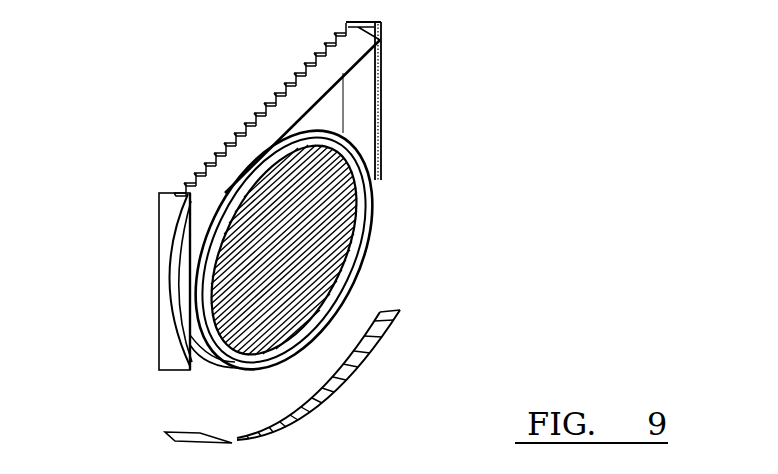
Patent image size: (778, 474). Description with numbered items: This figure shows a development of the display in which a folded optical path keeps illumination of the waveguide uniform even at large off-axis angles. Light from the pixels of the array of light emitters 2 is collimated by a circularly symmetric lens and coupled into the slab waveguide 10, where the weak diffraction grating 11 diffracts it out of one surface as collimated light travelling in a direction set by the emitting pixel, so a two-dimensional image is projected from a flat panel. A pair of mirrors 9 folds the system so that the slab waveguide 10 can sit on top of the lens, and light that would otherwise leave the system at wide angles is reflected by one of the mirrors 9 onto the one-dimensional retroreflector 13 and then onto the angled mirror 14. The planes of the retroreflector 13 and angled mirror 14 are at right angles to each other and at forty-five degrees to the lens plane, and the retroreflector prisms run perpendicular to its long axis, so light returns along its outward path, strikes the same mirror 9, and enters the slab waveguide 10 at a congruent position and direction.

The array of light emitters 2 is at (343, 383).
The pair of mirrors 9 is at (167, 227).
The slab waveguide 10 is at (372, 242).
The weak diffraction grating 11 is at (350, 202).
The one-dimensional retroreflector 13 is at (257, 111).
The angled mirror 14 is at (313, 90).